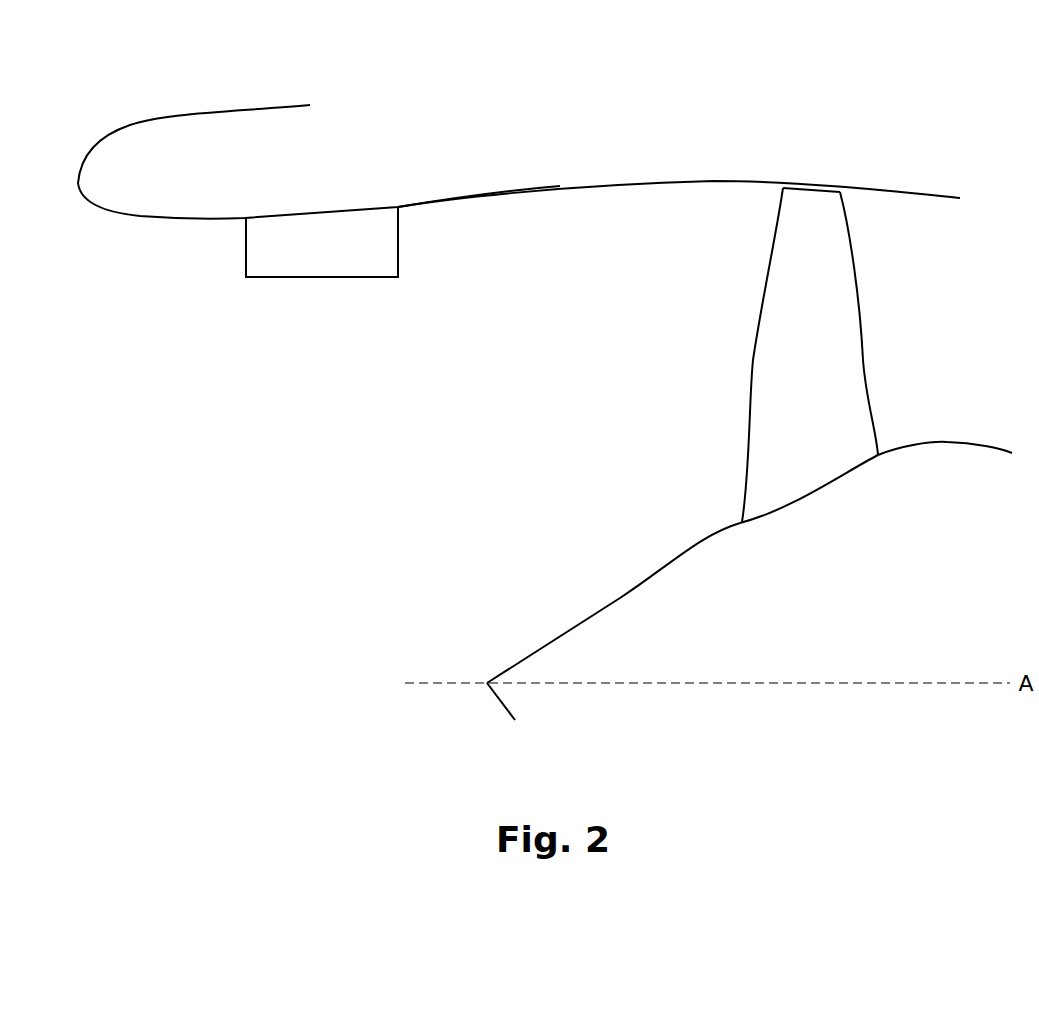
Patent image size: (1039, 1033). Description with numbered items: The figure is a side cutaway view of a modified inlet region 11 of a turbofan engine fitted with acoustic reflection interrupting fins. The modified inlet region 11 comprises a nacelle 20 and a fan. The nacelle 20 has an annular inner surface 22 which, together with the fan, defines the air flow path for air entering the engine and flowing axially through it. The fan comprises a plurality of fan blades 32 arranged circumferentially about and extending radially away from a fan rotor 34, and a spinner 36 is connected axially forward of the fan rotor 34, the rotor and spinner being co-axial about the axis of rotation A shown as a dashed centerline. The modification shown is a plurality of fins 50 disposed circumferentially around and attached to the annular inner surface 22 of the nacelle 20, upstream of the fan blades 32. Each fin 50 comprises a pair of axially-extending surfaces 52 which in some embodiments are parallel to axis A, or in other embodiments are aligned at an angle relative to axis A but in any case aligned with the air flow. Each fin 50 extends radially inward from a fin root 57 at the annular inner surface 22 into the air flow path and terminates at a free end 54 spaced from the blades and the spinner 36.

The modified inlet region 11 is at (100, 86).
The nacelle 20 is at (195, 177).
The annular inner surface 22 is at (446, 212).
The fan blade 32 is at (792, 370).
The fan rotor 34 is at (889, 504).
The spinner 36 is at (563, 659).
The fin 50 is at (309, 254).
The axially-extending surface 52 is at (368, 267).
The free end 54 is at (267, 278).
The fin root 57 is at (241, 221).